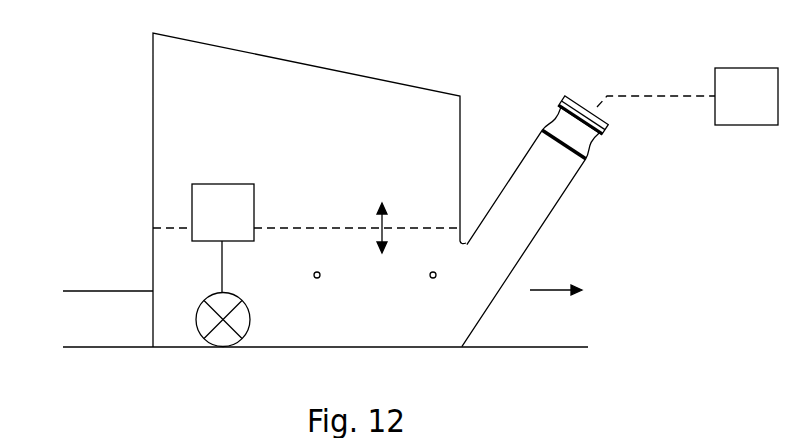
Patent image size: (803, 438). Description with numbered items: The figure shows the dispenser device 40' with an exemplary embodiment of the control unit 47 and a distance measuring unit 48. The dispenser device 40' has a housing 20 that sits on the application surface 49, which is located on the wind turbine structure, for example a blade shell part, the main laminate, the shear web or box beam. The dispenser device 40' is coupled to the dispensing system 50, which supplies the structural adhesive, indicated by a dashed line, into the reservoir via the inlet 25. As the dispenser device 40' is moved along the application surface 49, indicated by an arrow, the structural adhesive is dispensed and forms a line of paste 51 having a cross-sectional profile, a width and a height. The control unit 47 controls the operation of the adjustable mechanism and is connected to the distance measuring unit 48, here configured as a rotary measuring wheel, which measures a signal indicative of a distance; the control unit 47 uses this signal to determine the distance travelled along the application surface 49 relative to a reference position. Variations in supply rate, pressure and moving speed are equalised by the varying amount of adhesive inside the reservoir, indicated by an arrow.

The dispenser device 40' is at (263, 152).
The housing 20 is at (352, 87).
The inlet 25 is at (533, 218).
The dispensing system 50 is at (687, 96).
The control unit 47 is at (192, 207).
The distance measuring unit 48 is at (198, 328).
The line of paste 51 is at (84, 288).
The application surface 49 is at (568, 347).